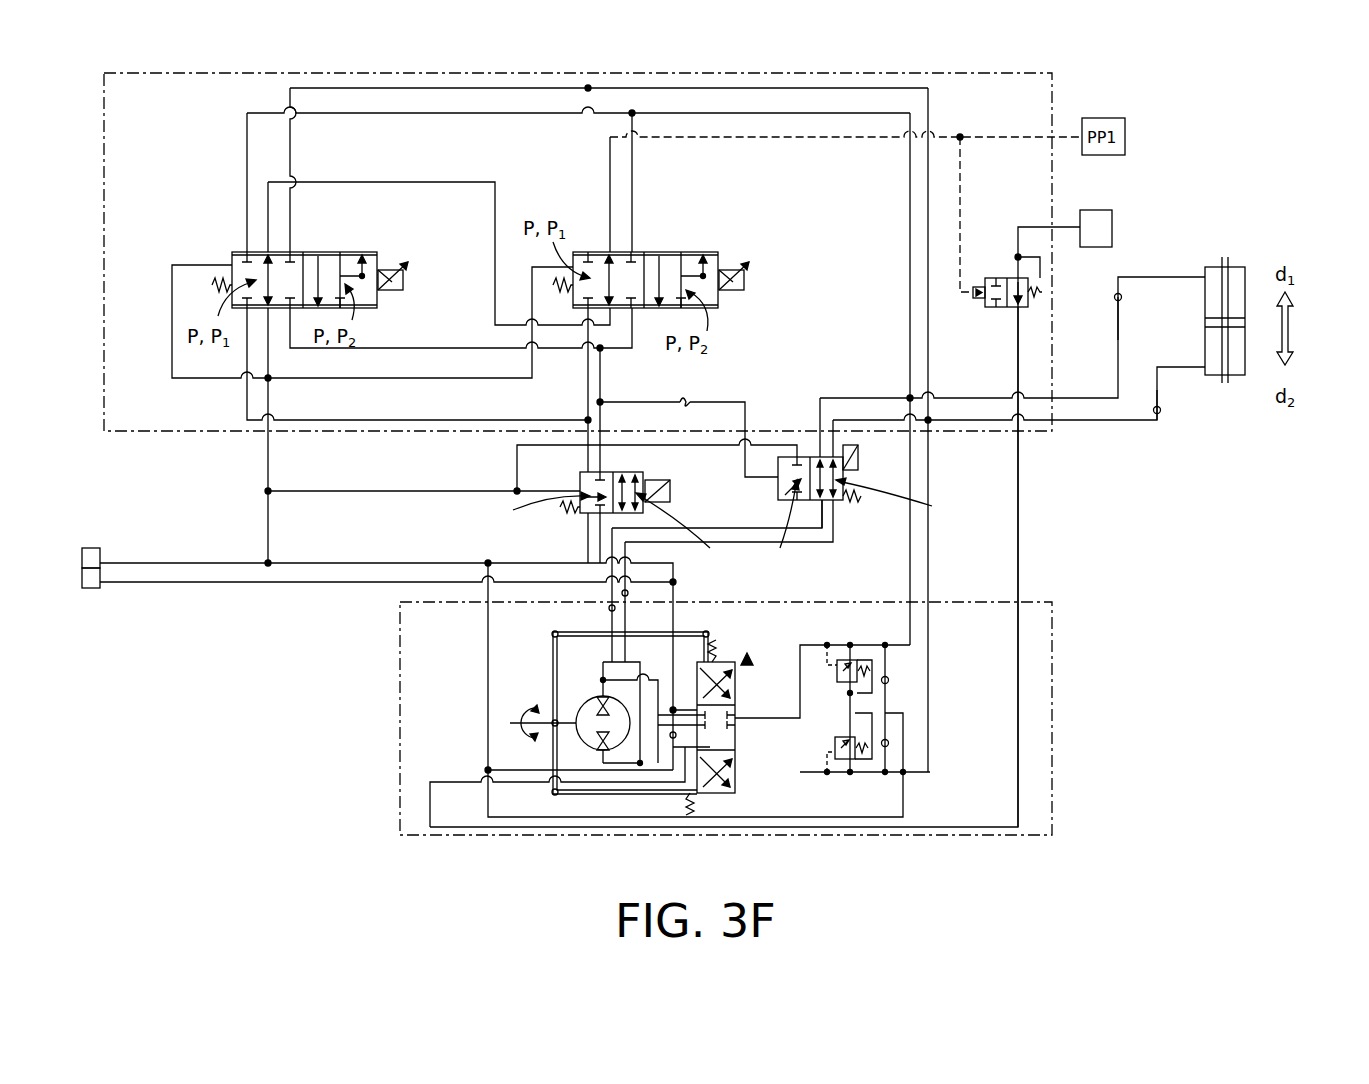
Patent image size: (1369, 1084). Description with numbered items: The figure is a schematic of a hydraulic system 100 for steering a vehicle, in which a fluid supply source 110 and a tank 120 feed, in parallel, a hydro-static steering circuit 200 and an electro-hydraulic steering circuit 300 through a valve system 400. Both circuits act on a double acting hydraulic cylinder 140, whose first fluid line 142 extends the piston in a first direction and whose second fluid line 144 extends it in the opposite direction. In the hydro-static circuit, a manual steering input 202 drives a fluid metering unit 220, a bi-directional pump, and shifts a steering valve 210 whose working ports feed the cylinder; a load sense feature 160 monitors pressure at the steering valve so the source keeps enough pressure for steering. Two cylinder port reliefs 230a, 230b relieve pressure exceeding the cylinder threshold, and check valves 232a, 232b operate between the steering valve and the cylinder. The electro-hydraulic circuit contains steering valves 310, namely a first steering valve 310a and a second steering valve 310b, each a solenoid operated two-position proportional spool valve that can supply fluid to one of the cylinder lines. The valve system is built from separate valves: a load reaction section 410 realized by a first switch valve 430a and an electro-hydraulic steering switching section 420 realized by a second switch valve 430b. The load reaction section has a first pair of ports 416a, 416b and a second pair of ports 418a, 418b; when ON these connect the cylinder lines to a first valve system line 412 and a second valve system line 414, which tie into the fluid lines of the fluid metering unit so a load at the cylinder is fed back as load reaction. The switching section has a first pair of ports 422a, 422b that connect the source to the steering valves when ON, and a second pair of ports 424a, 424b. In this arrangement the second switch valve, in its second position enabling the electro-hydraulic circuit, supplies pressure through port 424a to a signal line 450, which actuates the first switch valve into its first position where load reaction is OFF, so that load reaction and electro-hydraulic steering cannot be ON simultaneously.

The hydraulic system 100 is at (1243, 84).
The fluid supply source 110 is at (93, 590).
The tank 120 is at (120, 535).
The hydraulic cylinder 140 is at (1212, 270).
The first fluid line 142 is at (1122, 298).
The second fluid line 144 is at (1162, 410).
The load sense feature 160 is at (1090, 209).
The hydro-static steering circuit 200 is at (1053, 607).
The manual steering input 202 is at (530, 718).
The steering valve 210 is at (742, 659).
The fluid metering unit 220 is at (580, 700).
The first cylinder port relief 230a is at (852, 660).
The second cylinder port relief 230b is at (852, 772).
The first check valve 232a is at (889, 680).
The second check valve 232b is at (889, 743).
The electro-hydraulic steering circuit 300 is at (1050, 97).
The steering valves 310 is at (466, 247).
The first steering valve 310a is at (245, 253).
The second steering valve 310b is at (678, 252).
The valve system 400 is at (478, 543).
The load reaction section 410 is at (866, 457).
The first valve system line 412 is at (608, 609).
The second valve system line 414 is at (627, 597).
The first port of first pair of ports 416a is at (838, 460).
The second port of first pair of ports 416b is at (838, 502).
The first port of second pair of ports 418a is at (822, 398).
The second port of second pair of ports 418b is at (823, 503).
The electro-hydraulic steering switching section 420 is at (561, 478).
The first port of first pair of ports 422a is at (610, 472).
The second port of first pair of ports 422b is at (600, 515).
The first port of second pair of ports 424a is at (583, 473).
The second port of second pair of ports 424b is at (580, 508).
The first switch valve 430a is at (845, 443).
The second switch valve 430b is at (562, 470).
The signal line 450 is at (704, 390).